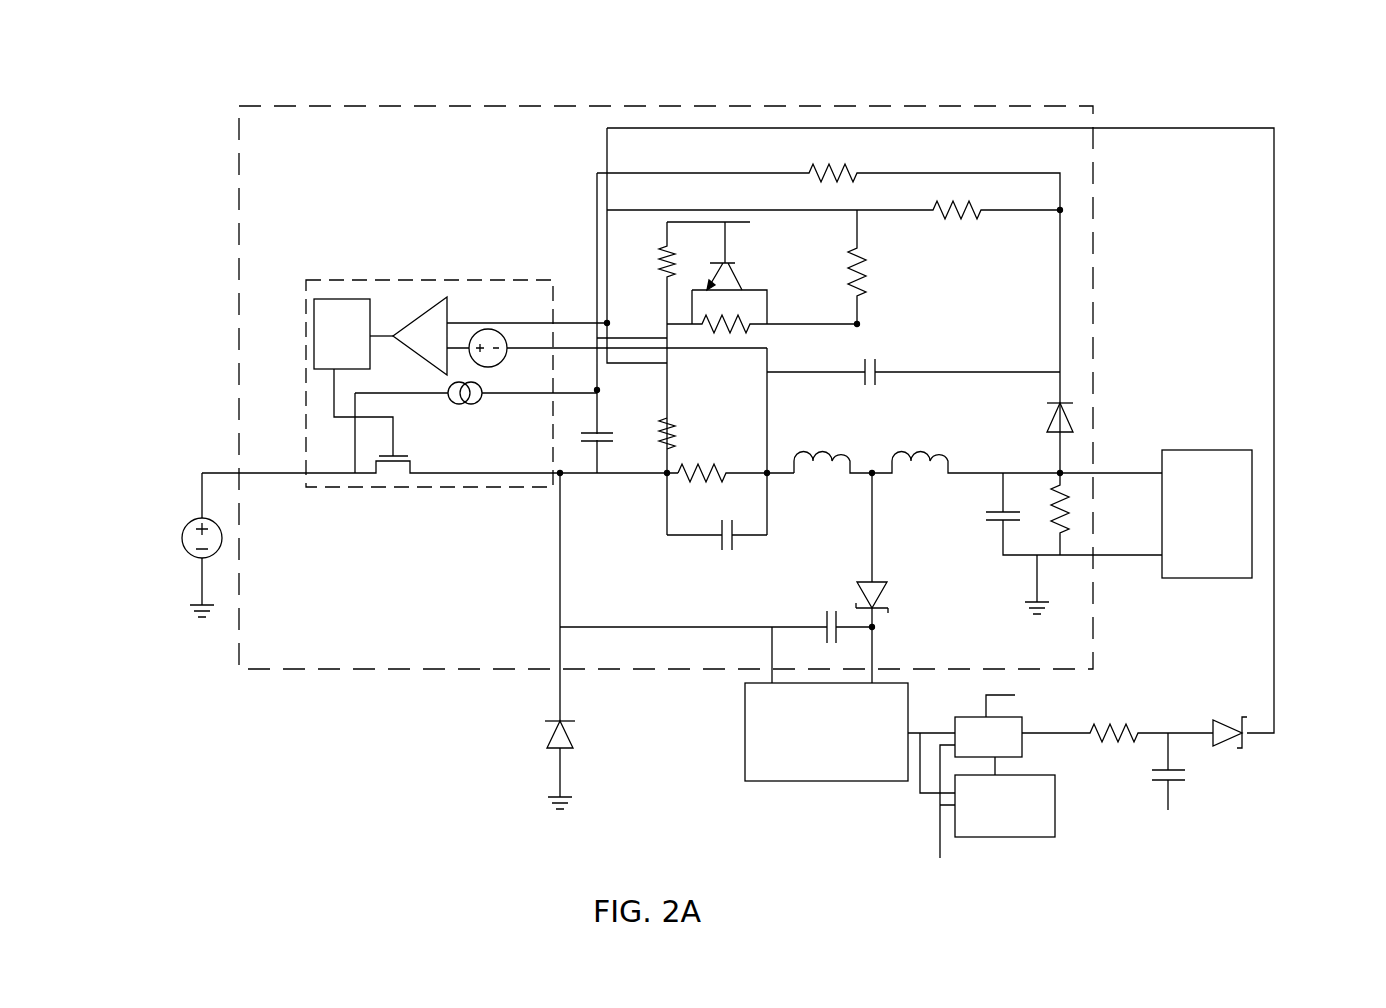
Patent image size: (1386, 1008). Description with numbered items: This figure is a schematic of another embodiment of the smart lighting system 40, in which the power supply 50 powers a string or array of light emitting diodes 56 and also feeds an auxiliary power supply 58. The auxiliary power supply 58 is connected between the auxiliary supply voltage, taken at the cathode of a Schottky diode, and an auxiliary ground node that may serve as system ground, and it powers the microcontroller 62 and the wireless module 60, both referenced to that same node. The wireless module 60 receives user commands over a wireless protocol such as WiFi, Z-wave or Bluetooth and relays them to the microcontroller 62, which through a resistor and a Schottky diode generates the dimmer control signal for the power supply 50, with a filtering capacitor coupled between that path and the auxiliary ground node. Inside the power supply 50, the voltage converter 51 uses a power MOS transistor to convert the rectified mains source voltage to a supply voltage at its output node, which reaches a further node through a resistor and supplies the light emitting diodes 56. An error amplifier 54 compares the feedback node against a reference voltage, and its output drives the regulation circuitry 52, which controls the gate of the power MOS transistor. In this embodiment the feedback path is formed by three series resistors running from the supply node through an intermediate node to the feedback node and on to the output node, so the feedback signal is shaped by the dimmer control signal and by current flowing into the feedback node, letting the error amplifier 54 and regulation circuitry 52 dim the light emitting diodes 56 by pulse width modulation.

The smart lighting system 40 is at (737, 70).
The power supply 50 is at (238, 197).
The voltage converter 51 is at (305, 418).
The regulation circuitry 52 is at (313, 327).
The error amplifier 54 is at (440, 302).
The light emitting diodes (LEDs) 56 is at (1175, 580).
The auxiliary power supply 58 is at (850, 782).
The wireless module 60 is at (1030, 837).
The microcontroller (MCU) 62 is at (1022, 735).